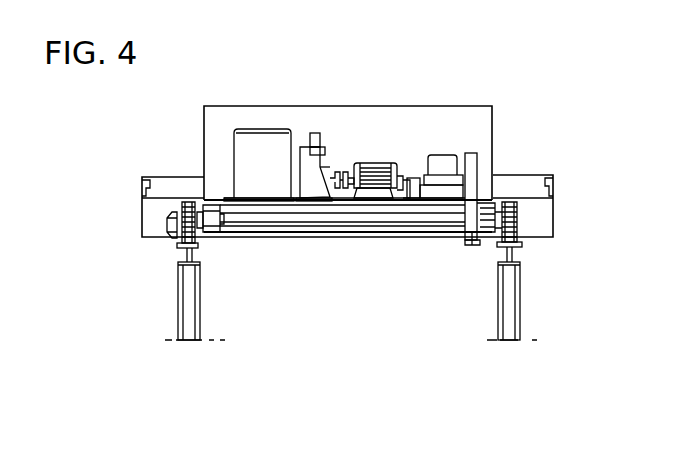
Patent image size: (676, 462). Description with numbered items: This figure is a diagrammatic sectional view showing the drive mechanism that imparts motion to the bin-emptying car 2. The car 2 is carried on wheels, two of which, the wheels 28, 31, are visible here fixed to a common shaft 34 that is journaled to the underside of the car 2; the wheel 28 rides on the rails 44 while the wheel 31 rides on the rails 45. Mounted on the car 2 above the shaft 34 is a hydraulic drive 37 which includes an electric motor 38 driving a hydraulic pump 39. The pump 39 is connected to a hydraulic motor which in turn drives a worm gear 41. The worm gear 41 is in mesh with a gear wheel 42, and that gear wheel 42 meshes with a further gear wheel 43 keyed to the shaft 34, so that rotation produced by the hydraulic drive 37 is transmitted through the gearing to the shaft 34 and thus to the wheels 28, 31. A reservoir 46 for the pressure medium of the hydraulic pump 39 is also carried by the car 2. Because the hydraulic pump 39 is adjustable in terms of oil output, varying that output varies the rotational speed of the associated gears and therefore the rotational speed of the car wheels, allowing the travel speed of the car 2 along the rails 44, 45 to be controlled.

The bin-emptying car 2 is at (238, 106).
The wheel 28 is at (190, 202).
The wheel 31 is at (510, 220).
The shaft 34 is at (376, 222).
The hydraulic drive 37 is at (383, 62).
The electric motor 38 is at (374, 165).
The hydraulic pump 39 is at (303, 147).
The worm gear 41 is at (438, 158).
The gear wheel 42 is at (468, 170).
The gear wheel 43 is at (472, 247).
The rails 44 is at (185, 252).
The rails 45 is at (512, 251).
The reservoir 46 is at (238, 145).